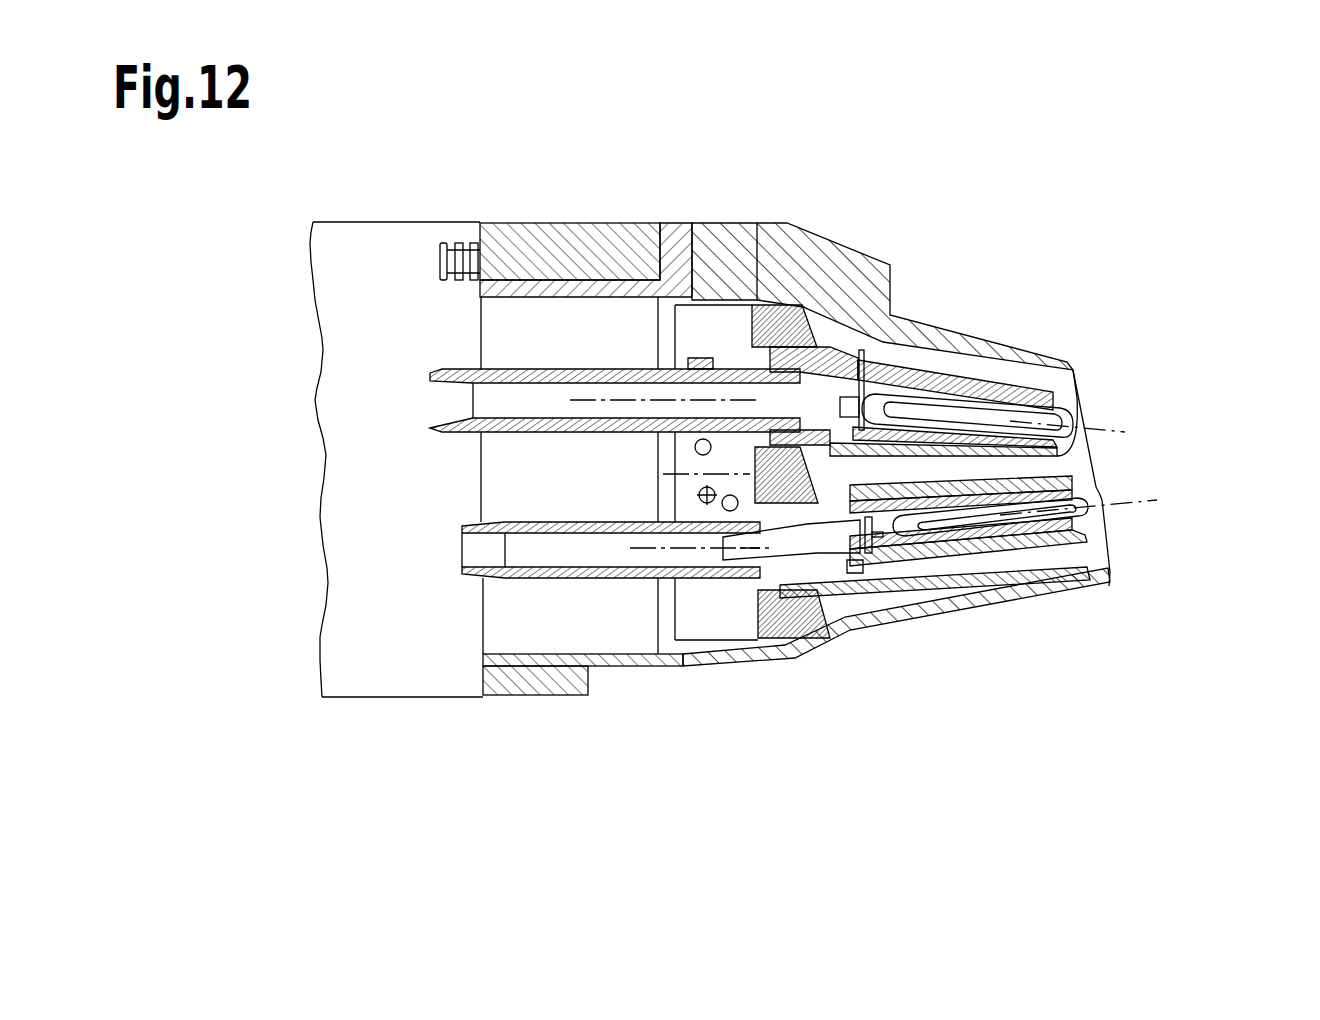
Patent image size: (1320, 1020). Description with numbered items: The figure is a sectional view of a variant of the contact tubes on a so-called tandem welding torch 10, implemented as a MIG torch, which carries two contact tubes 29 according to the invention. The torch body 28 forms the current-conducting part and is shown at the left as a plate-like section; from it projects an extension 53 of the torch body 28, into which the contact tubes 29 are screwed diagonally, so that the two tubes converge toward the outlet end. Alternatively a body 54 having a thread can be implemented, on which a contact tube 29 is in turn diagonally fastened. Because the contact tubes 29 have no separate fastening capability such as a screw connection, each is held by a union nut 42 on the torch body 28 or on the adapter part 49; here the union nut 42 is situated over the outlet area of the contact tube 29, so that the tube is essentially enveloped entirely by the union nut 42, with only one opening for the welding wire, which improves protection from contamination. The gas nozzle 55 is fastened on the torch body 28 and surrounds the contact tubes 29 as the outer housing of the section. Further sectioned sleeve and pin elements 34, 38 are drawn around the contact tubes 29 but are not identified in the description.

The welding torch 10 is at (1170, 226).
The torch body 28 is at (365, 522).
The contact tube 29 is at (997, 395).
The collet sleeve 34 is at (887, 412).
The pin 38 is at (862, 410).
The union nut 42 is at (903, 380).
The adapter part 49 is at (832, 597).
The extension 53 is at (566, 580).
The body 54 is at (594, 370).
The gas nozzle 55 is at (750, 657).